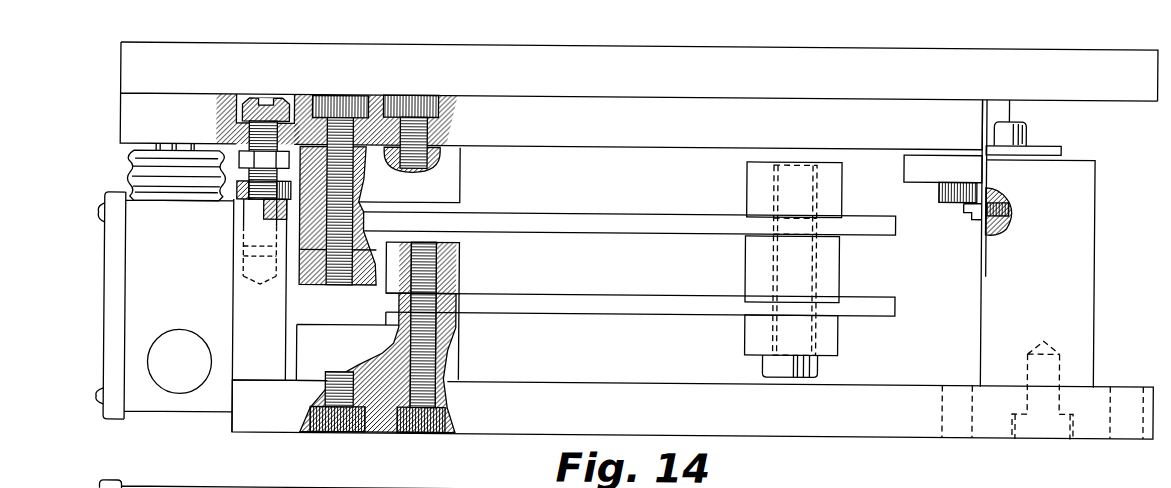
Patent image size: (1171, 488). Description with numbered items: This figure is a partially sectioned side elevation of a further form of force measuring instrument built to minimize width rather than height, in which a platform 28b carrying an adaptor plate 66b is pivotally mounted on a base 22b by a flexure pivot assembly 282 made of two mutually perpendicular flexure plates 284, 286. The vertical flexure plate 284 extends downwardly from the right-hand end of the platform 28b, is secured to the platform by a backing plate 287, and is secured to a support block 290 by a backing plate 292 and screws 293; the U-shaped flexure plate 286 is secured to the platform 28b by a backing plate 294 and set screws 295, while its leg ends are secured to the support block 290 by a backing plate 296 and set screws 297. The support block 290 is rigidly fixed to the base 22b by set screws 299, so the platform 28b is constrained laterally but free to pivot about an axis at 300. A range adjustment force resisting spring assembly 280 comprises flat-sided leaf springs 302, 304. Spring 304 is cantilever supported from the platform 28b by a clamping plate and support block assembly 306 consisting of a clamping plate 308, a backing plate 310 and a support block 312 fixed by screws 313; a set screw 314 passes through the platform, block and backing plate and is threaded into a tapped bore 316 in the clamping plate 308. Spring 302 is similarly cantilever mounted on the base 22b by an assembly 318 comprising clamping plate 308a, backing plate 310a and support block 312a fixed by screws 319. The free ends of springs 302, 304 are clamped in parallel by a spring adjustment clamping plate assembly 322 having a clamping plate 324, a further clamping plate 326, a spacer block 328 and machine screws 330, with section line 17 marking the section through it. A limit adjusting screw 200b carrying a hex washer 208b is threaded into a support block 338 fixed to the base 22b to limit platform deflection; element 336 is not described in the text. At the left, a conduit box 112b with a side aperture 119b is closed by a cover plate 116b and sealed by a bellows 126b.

The adaptor plate 66b is at (797, 48).
The platform 28b is at (688, 98).
The base 22b is at (855, 432).
The limit adjusting screw 200b is at (270, 90).
The hex washer 208b is at (240, 157).
The bellows 126b is at (129, 165).
The cover plate 116b is at (106, 300).
The aperture 119b is at (156, 347).
The conduit box 112b is at (197, 411).
The threaded insert 336 is at (268, 211).
The support block 338 is at (280, 380).
The clamping plate 308 is at (300, 272).
The clamping plate and support block assembly 306 is at (326, 290).
The tapped bore 316 is at (340, 285).
The set screw 314 is at (340, 96).
The screw 313 is at (412, 96).
The support block 312 is at (461, 171).
The backing plate 310 is at (380, 201).
The clamping plate 308a is at (456, 258).
The clamping plate and support block assembly 318 is at (466, 279).
The backing plate 310a is at (454, 322).
The support block 312a is at (455, 361).
The screw 319 is at (338, 432).
The clamping plate 324 is at (748, 168).
The leaf spring 304 is at (718, 213).
The spacer block 328 is at (747, 263).
The leaf spring 302 is at (719, 294).
The clamping plate 326 is at (748, 335).
The machine screw 330 is at (767, 364).
The spring adjustment clamping plate assembly 322 is at (852, 266).
The range adjustment force resisting spring assembly 280 is at (866, 331).
The section line 17 is at (882, 201).
The backing plate 294 is at (908, 150).
The flexure plate 286 is at (948, 154).
The pivot axis 300 is at (985, 148).
The backing plate 287 is at (1012, 107).
The set screw 297 is at (1027, 125).
The backing plate 296 is at (1062, 144).
The flexure plate 284 is at (989, 171).
The flexure pivot assembly 282 is at (1003, 188).
The support block 290 is at (1089, 200).
The screw 293 is at (1006, 215).
The set screw 295 is at (950, 189).
The backing plate 292 is at (982, 218).
The set screw 299 is at (1047, 438).